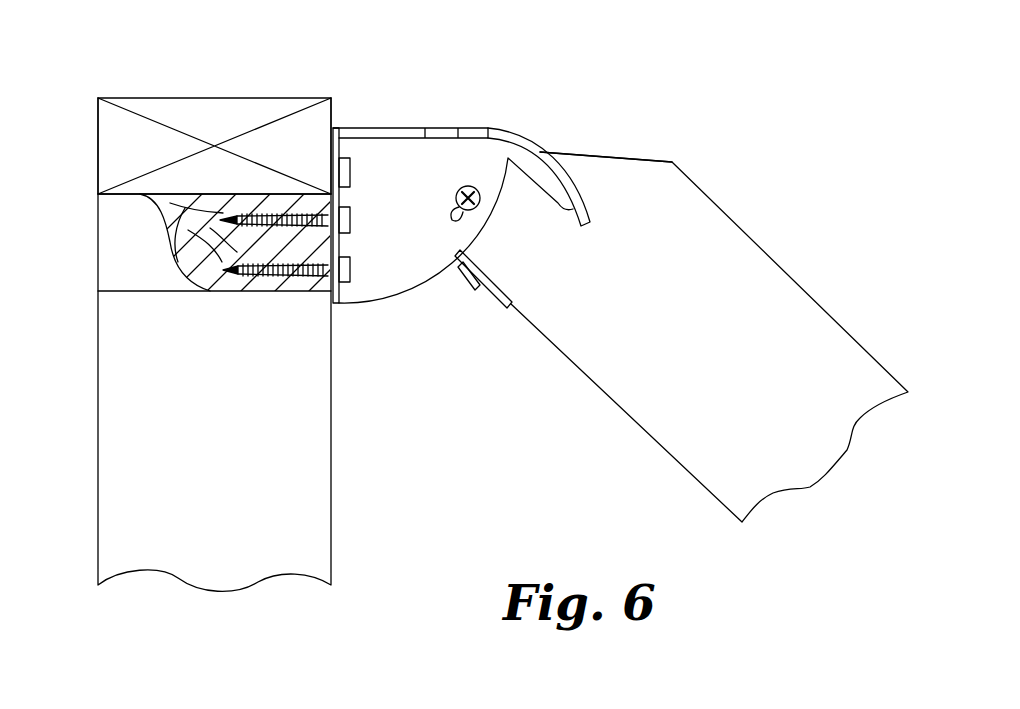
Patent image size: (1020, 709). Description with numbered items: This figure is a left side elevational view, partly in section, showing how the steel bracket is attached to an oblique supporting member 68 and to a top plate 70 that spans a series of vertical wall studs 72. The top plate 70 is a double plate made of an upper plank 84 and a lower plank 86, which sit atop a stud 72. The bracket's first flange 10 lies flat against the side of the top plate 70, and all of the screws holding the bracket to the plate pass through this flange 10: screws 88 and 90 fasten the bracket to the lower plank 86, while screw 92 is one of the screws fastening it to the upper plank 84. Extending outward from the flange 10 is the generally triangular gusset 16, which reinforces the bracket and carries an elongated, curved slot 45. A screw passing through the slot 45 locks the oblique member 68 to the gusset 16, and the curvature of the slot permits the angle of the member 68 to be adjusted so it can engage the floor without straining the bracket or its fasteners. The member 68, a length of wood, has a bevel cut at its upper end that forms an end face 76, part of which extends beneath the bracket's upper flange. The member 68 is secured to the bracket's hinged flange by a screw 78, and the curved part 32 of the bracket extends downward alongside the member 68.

The first flange 10 is at (343, 297).
The gusset 16 is at (392, 272).
The curved part 32 is at (572, 181).
The curved slot 45 is at (455, 201).
The oblique supporting member 68 is at (618, 393).
The top plate 70 is at (336, 114).
The vertical wall stud 72 is at (315, 447).
The end face 76 is at (603, 157).
The screw 78 is at (470, 284).
The upper plank 84 is at (211, 106).
The lower plank 86 is at (162, 275).
The screw 88 is at (350, 214).
The screw 90 is at (350, 268).
The screw 92 is at (352, 168).